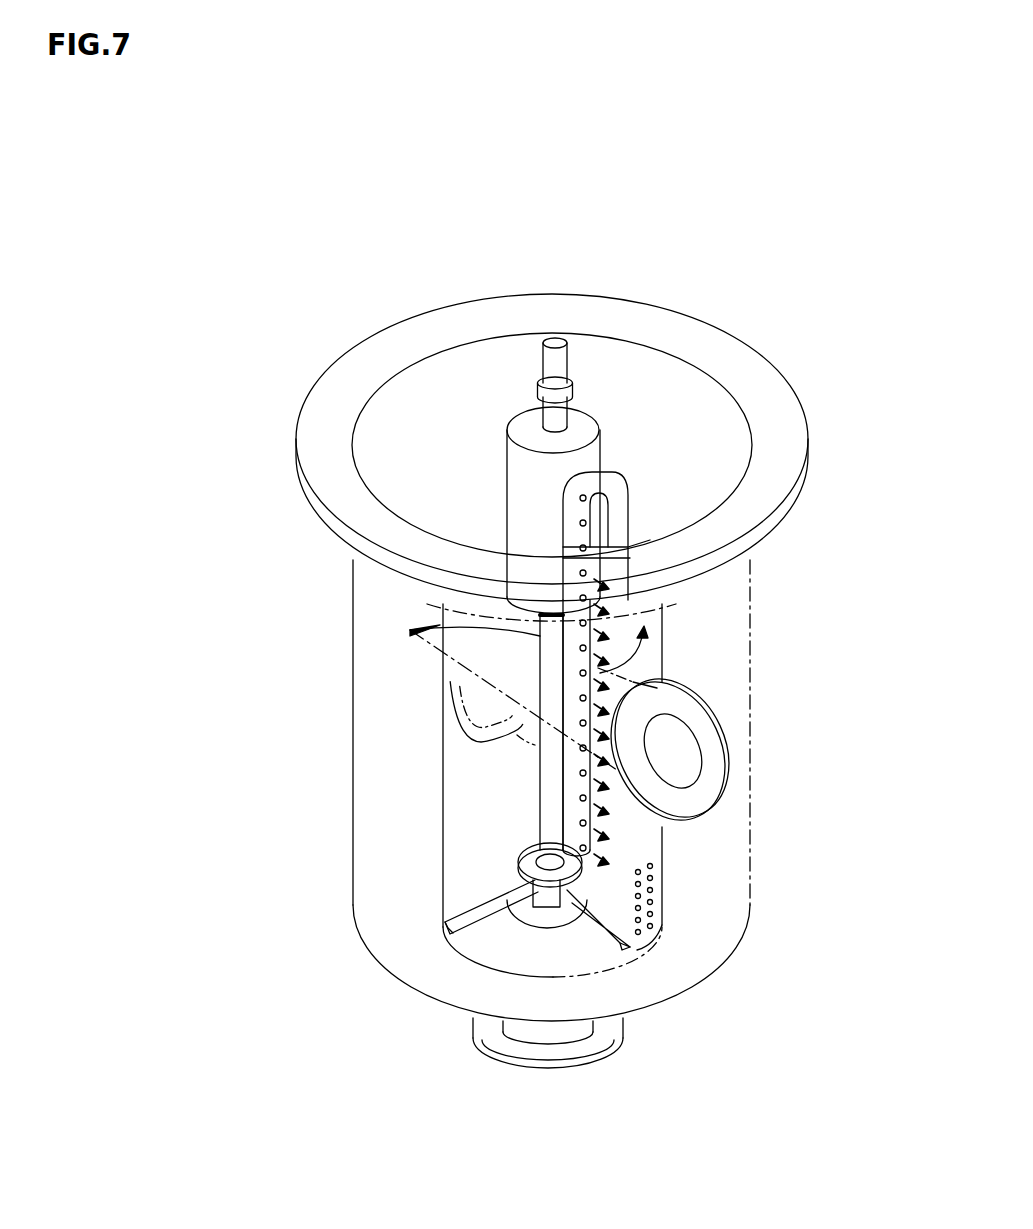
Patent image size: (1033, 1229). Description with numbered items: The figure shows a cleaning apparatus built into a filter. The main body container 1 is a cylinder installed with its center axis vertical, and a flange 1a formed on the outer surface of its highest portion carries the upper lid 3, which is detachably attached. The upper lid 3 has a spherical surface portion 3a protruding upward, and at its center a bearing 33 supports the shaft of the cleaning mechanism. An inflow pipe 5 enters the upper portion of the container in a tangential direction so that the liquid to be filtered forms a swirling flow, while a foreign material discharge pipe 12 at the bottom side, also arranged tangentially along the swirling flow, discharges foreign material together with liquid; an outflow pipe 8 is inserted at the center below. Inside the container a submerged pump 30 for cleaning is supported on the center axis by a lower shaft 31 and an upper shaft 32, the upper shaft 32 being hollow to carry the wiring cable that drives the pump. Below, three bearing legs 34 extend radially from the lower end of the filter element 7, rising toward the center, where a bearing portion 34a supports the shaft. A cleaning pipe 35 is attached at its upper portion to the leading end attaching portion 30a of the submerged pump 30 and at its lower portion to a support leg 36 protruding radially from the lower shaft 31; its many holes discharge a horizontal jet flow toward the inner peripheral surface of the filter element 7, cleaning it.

The main body container 1 is at (350, 706).
The flange 1a is at (326, 540).
The upper lid 3 is at (316, 383).
The spherical surface portion 3a is at (460, 368).
The inflow pipe 5 is at (640, 678).
The filter element 7 is at (664, 891).
The outflow pipe 8 is at (536, 1032).
The foreign material discharge pipe 12 is at (470, 756).
The submerged pump 30 is at (507, 460).
The leading end attaching portion 30a is at (615, 567).
The lower shaft 31 is at (540, 780).
The upper shaft 32 is at (570, 357).
The bearing 33 is at (575, 395).
The bearing leg 34 is at (453, 933).
The bearing portion 34a is at (535, 876).
The cleaning pipe 35 is at (597, 826).
The support leg 36 is at (565, 937).